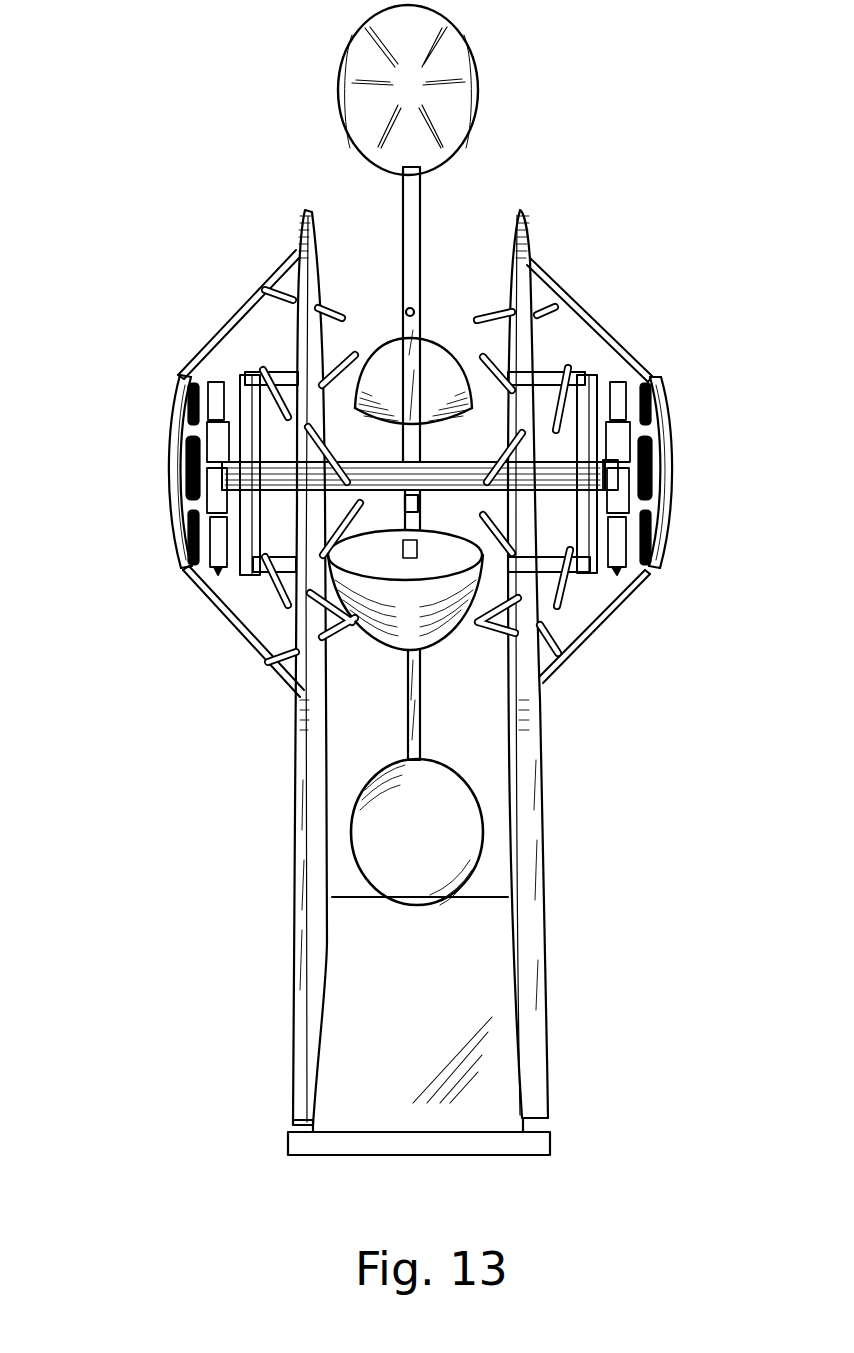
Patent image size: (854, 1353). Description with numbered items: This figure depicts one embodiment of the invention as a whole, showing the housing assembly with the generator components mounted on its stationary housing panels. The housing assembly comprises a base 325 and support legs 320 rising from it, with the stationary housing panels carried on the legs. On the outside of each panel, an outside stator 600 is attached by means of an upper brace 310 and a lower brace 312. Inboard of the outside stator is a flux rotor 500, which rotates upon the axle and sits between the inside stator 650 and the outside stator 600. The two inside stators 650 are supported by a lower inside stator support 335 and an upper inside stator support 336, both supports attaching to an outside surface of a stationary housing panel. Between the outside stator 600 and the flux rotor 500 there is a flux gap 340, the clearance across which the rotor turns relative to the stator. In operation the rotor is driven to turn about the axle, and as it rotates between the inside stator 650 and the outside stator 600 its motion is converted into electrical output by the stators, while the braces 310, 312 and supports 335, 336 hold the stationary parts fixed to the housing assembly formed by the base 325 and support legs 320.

The upper brace 310 is at (637, 355).
The lower brace 312 is at (232, 622).
The support leg 320 is at (547, 892).
The base 325 is at (448, 1002).
The lower inside stator support 335 is at (568, 572).
The upper inside stator support 336 is at (285, 367).
The flux gap 340 is at (203, 397).
The flux rotor 500 is at (218, 382).
The outside stator 600 is at (172, 553).
The inside stator 650 is at (580, 375).